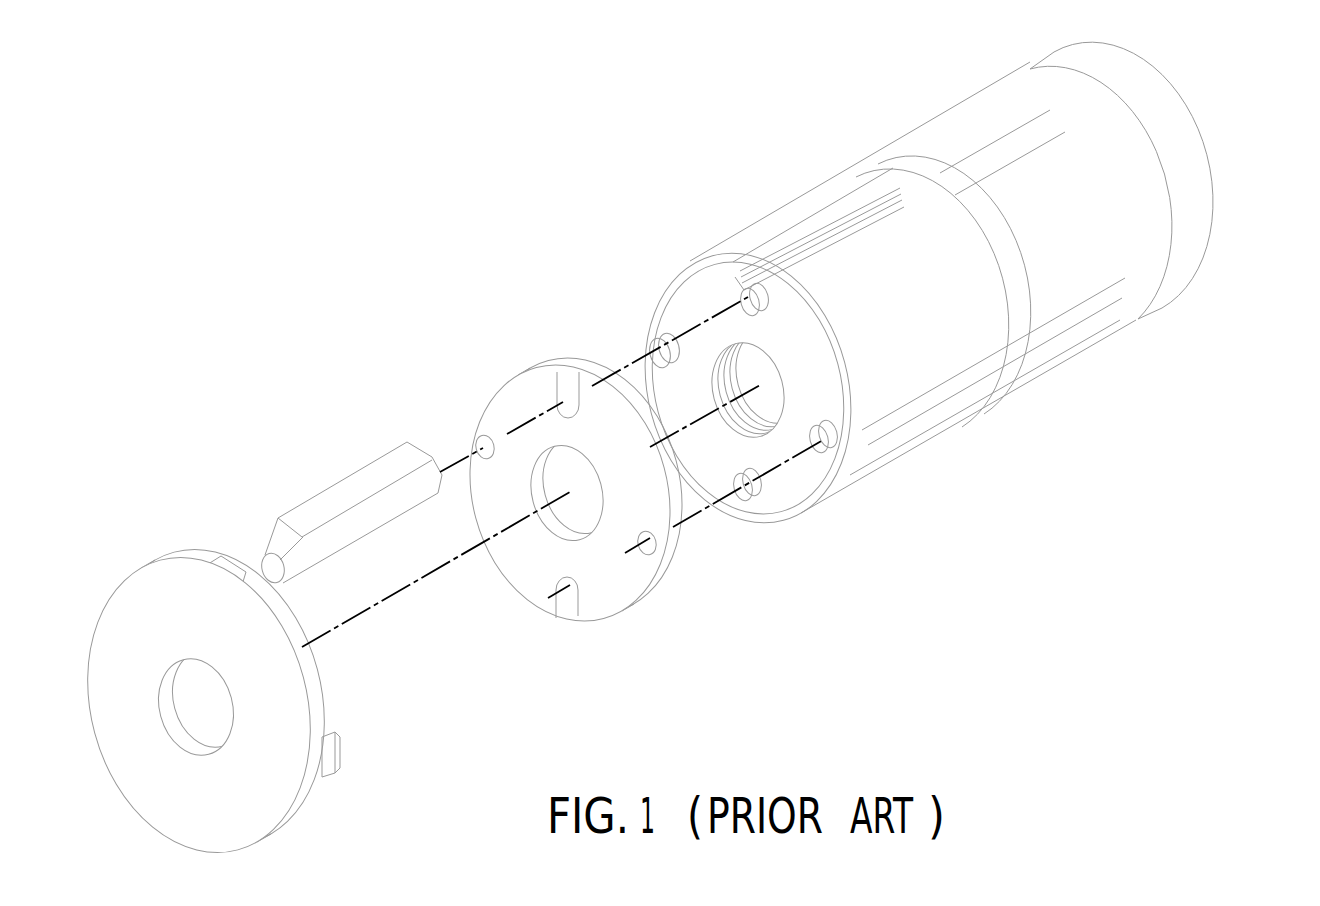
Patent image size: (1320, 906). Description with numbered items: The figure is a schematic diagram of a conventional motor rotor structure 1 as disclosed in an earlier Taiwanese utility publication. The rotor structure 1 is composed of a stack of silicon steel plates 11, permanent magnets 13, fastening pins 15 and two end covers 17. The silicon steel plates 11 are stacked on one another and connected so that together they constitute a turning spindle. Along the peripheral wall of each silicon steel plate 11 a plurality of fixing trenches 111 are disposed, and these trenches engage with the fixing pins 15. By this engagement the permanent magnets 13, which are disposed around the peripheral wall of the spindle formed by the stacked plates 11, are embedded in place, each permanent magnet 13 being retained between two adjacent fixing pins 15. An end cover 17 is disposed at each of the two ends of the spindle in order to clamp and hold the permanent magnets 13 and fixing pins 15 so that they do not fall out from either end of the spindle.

The motor rotor structure 1 is at (713, 134).
The silicon steel plate 11 is at (581, 489).
The notch of locking disc 111 is at (490, 436).
The permanent magnet 13 is at (922, 457).
The fastening pin 15 is at (332, 500).
The end cover 17 is at (1178, 131).